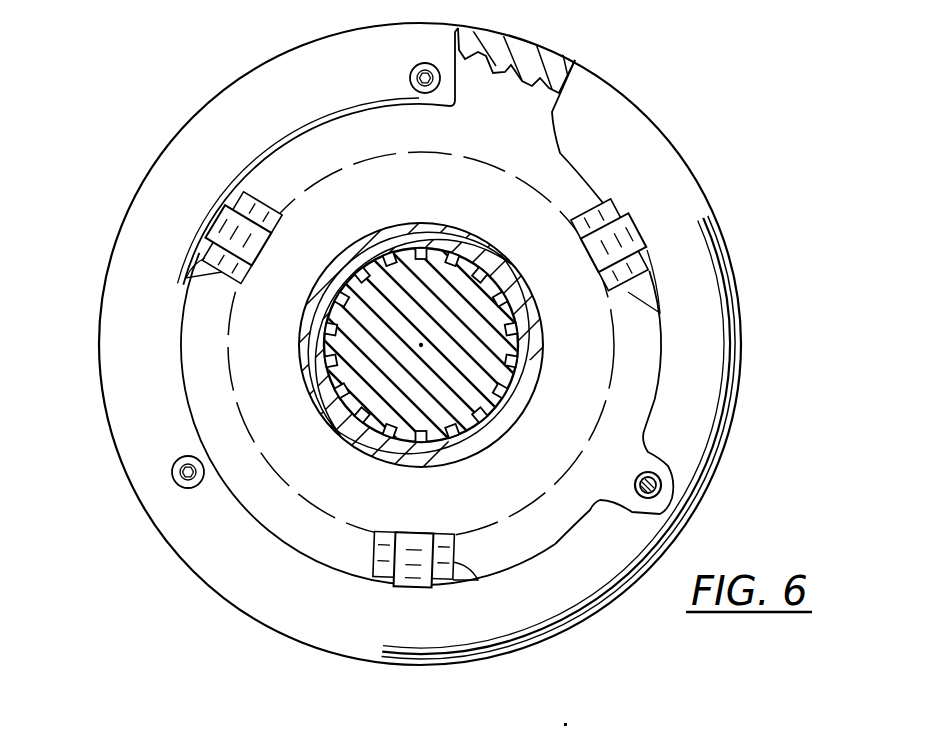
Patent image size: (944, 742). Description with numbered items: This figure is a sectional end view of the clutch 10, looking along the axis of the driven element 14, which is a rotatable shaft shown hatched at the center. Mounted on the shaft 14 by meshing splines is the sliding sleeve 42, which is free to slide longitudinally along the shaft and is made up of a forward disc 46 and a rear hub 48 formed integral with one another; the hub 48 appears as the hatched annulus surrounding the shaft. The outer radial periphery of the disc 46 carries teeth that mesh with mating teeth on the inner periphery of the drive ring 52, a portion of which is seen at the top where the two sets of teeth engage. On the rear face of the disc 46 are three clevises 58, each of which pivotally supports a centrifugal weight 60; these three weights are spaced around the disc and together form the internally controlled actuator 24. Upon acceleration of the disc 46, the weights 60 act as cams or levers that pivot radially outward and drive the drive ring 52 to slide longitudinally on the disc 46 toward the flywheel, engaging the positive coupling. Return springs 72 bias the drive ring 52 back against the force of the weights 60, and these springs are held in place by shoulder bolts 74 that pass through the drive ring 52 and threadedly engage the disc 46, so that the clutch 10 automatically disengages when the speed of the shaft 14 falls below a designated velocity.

The clutch 10 is at (206, 89).
The driven element 14 is at (495, 352).
The internally controlled actuator 24 is at (389, 590).
The sliding sleeve 42 is at (550, 378).
The forward disc 46 is at (547, 115).
The rear hub 48 is at (490, 440).
The drive ring 52 is at (574, 58).
The clevis 58 is at (186, 278).
The centrifugal weight 60 is at (212, 215).
The return spring 72 is at (663, 478).
The shoulder bolt 74 is at (410, 78).